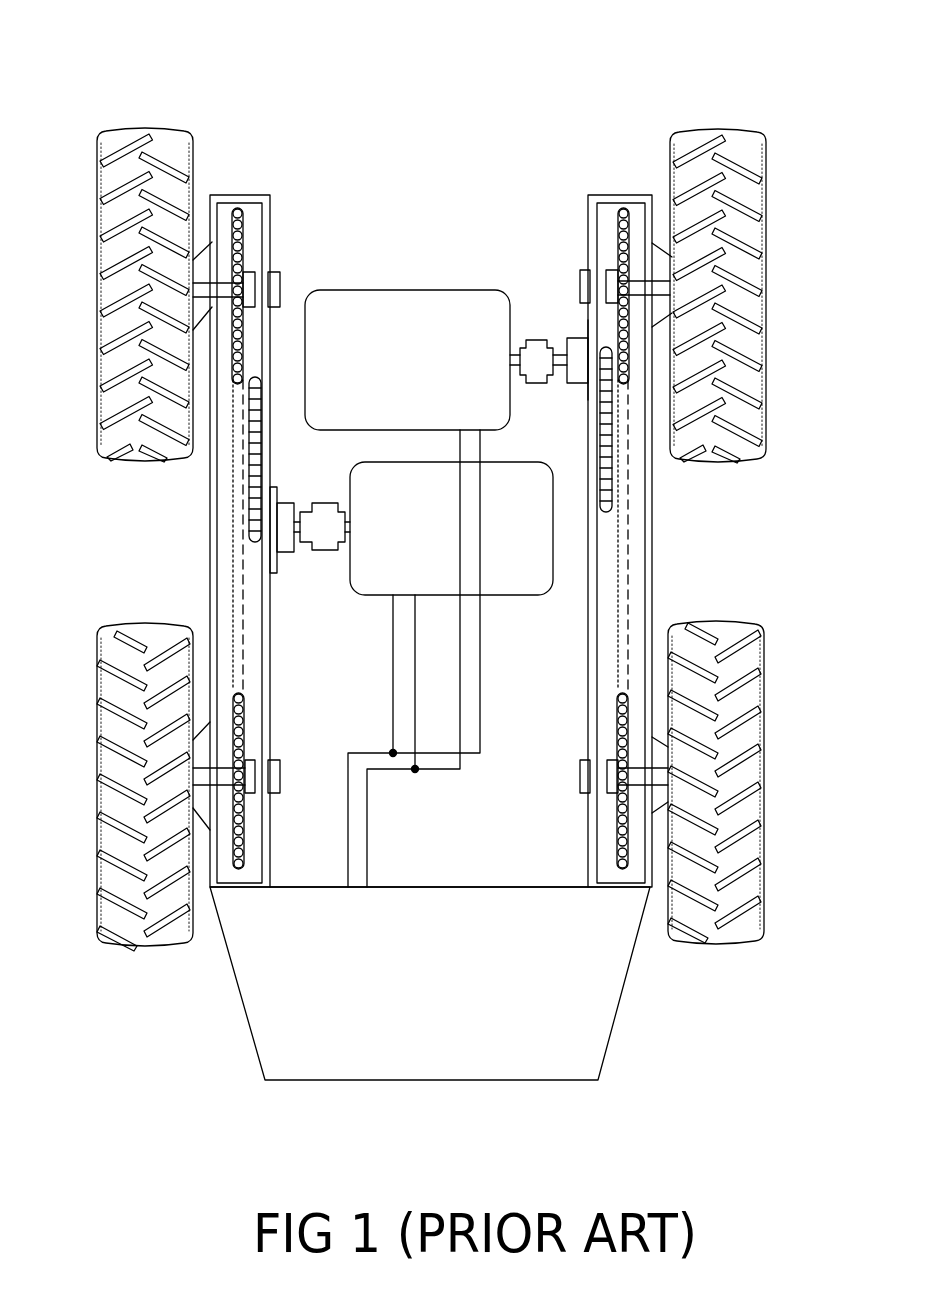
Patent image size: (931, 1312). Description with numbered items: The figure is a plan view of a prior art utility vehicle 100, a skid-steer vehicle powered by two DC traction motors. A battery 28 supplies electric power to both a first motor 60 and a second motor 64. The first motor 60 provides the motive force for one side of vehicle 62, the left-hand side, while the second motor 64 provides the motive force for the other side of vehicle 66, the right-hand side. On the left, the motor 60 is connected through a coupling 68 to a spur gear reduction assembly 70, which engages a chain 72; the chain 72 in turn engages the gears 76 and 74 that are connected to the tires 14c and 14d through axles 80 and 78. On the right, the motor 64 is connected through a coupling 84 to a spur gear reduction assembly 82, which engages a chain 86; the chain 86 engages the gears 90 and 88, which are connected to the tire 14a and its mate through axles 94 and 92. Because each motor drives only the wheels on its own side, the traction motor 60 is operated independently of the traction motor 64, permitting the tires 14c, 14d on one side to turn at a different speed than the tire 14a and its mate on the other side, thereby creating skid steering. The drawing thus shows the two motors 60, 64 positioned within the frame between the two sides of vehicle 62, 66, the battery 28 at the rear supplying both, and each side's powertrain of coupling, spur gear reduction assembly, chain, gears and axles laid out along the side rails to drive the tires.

The prior art utility vehicle 100 is at (614, 62).
The tire 14a is at (750, 774).
The tire 14c is at (120, 292).
The tire 14d is at (112, 806).
The battery 28 is at (410, 997).
The motor 60 is at (401, 541).
The side of vehicle 62 is at (212, 530).
The motor 64 is at (396, 367).
The side of vehicle 66 is at (654, 548).
The coupling 68 is at (323, 552).
The spur gear reduction assembly 70 is at (262, 456).
The chain 72 is at (250, 640).
The gear 74 is at (245, 822).
The gear 76 is at (243, 236).
The axle 78 is at (224, 790).
The axle 80 is at (216, 288).
The spur gear reduction assembly 82 is at (584, 338).
The coupling 84 is at (534, 384).
The chain 86 is at (620, 606).
The gear 88 is at (618, 840).
The gear 90 is at (622, 238).
The axle 92 is at (650, 776).
The axle 94 is at (660, 272).